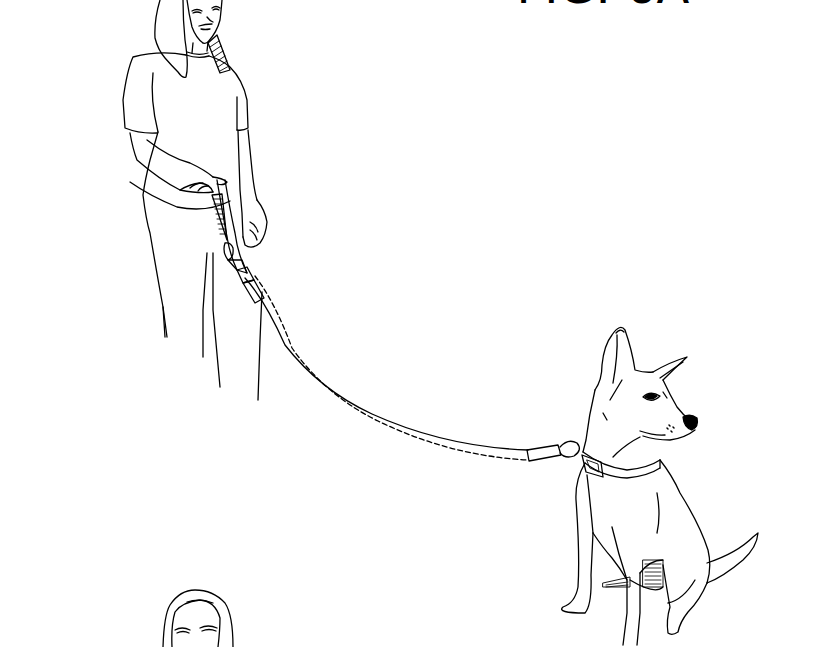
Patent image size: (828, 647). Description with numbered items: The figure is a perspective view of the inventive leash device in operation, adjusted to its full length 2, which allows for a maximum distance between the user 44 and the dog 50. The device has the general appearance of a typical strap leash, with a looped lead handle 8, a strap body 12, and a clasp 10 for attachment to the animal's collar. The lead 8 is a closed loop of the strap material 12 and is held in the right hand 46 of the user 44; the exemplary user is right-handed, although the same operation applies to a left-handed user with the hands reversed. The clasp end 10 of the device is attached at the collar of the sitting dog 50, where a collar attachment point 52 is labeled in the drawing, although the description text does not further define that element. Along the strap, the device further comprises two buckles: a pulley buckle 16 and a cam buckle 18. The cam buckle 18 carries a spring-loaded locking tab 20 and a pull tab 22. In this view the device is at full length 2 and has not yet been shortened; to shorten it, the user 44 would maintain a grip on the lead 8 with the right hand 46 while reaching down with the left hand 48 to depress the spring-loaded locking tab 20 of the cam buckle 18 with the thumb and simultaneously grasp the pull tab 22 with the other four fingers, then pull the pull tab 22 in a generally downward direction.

The leash device at full length 2 is at (425, 323).
The looped lead handle 8 is at (233, 218).
The clasp 10 is at (573, 450).
The strap body 12 is at (370, 417).
The pulley buckle 16 is at (223, 245).
The cam buckle 18 is at (237, 270).
The spring-loaded locking tab 20 is at (253, 273).
The pull tab 22 is at (263, 298).
The user 44 is at (143, 72).
The right hand 46 is at (190, 188).
The left hand 48 is at (263, 232).
The dog 50 is at (685, 495).
The collar ring 52 is at (593, 473).